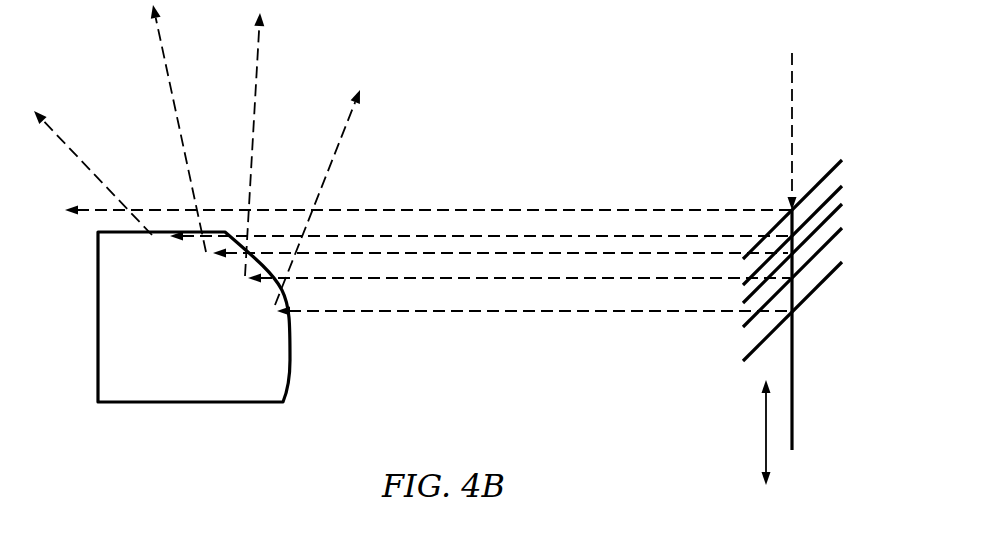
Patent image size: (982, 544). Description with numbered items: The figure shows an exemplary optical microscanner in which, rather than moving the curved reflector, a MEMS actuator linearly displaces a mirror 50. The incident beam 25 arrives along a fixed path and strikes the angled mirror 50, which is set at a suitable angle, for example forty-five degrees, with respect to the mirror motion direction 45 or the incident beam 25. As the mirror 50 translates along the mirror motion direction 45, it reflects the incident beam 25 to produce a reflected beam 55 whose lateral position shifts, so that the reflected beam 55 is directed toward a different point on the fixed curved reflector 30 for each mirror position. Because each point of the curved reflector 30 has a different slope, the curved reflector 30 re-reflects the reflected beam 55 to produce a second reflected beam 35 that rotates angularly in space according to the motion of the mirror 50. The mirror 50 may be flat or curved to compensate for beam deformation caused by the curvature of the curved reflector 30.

The optical incident beam 25 is at (793, 118).
The curved reflector 30 is at (291, 364).
The second reflected beam 35 is at (337, 153).
The mirror motion direction 45 is at (765, 447).
The mirror 50 is at (810, 296).
The reflected beam 55 is at (518, 313).